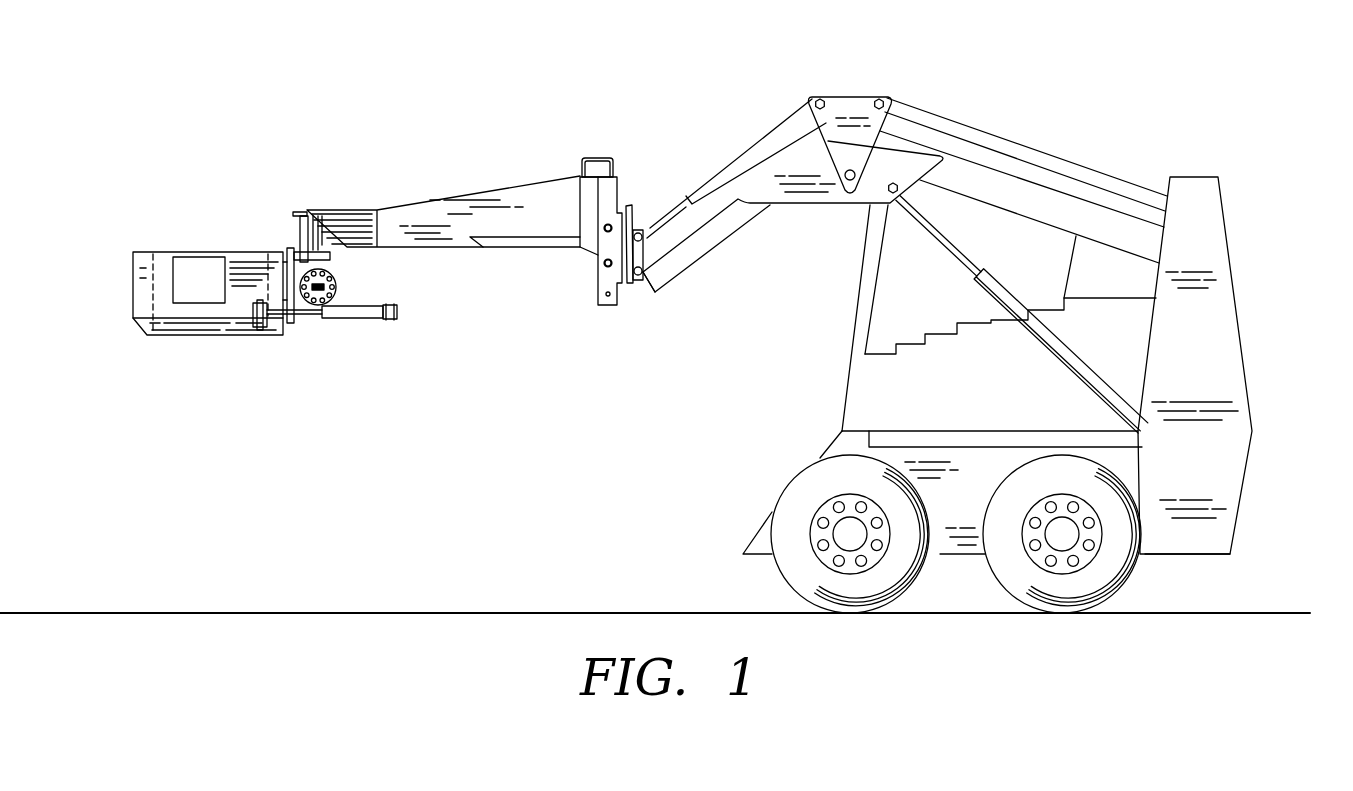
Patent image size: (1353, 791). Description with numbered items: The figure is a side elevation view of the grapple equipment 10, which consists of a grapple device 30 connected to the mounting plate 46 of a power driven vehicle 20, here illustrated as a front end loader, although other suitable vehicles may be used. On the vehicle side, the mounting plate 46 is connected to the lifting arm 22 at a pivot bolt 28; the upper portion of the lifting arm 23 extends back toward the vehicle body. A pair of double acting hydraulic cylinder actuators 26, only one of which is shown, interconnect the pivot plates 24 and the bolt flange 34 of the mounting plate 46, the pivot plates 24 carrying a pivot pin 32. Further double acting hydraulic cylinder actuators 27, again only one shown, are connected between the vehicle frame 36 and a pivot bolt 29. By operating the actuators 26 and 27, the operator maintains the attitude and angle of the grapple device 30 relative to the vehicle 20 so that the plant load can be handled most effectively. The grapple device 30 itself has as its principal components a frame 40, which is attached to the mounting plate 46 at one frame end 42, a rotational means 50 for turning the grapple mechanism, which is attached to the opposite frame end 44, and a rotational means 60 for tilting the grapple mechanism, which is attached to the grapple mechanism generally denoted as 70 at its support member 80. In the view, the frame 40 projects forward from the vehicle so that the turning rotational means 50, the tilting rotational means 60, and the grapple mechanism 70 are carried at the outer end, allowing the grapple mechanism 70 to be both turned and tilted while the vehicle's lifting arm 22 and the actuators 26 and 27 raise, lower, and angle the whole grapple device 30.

The grapple equipment 10 is at (594, 383).
The power driven vehicle 20 is at (1250, 261).
The lifting arm 22 is at (725, 240).
The loader arm upper portion 23 is at (1038, 195).
The pivot plates 24 is at (857, 95).
The double acting hydraulic cylinder actuators 26 is at (742, 150).
The double acting hydraulic cylinder actuators 27 is at (1043, 350).
The pivot bolt 28 is at (638, 276).
The pivot bolt 29 is at (888, 190).
The grapple device 30 is at (496, 185).
The pivot pin 32 is at (815, 100).
The bolt flange 34 is at (645, 258).
The vehicle frame 36 is at (1020, 430).
The frame 40 is at (447, 233).
The frame end 42 is at (623, 154).
The frame end 44 is at (315, 201).
The mounting plate 46 is at (630, 205).
The rotational means 50 is at (300, 232).
The rotational means 60 is at (318, 276).
The grapple mechanism 70 is at (187, 243).
The support member 80 is at (312, 309).